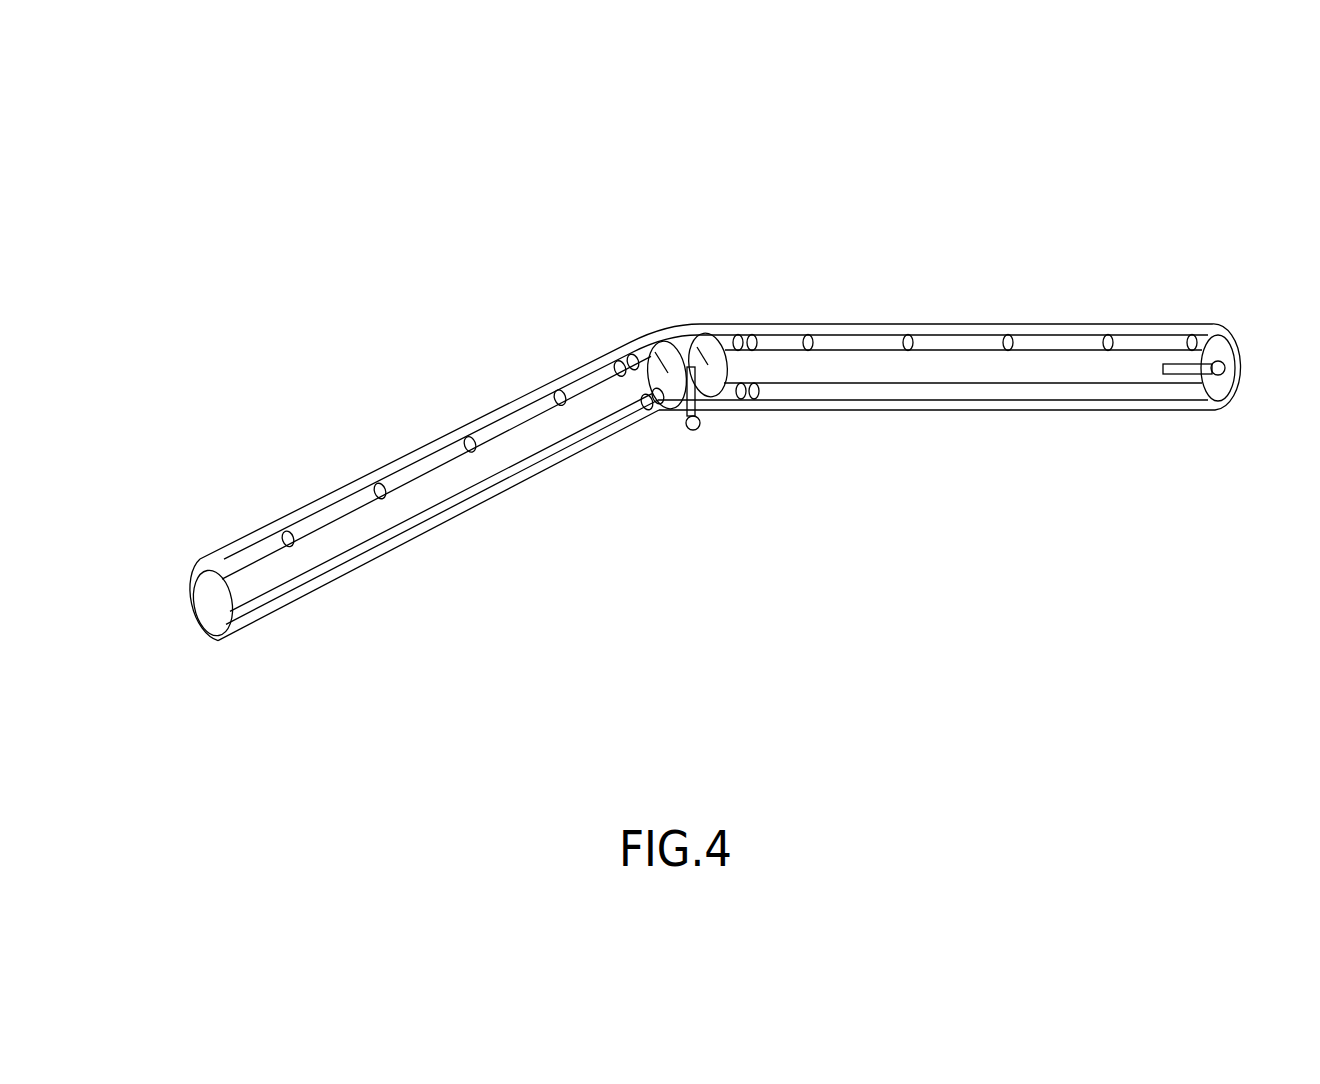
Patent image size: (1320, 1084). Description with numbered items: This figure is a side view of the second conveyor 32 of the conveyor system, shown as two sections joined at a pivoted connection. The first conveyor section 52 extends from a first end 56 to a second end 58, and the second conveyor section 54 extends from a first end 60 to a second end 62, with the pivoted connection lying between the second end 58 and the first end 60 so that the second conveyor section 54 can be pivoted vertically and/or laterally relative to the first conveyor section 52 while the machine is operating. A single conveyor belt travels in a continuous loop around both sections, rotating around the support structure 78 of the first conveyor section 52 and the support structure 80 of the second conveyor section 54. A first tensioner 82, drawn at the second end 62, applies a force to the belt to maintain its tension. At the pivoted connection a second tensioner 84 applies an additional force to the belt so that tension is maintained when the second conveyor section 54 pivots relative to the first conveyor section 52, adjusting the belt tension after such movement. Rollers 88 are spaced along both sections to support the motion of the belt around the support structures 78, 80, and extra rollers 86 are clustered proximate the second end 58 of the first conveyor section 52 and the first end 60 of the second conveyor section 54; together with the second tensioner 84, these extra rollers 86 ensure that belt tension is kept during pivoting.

The second conveyor 32 is at (1190, 194).
The first conveyor section 52 is at (408, 582).
The second conveyor section 54 is at (1023, 452).
The first end 56 is at (210, 602).
The second end 58 is at (652, 340).
The first end 60 is at (695, 336).
The second end 62 is at (1226, 359).
The support structure 78 is at (253, 580).
The support structure 80 is at (924, 376).
The first tensioner 82 is at (1219, 377).
The second tensioner 84 is at (698, 429).
The extra rollers 86 is at (631, 354).
The rollers 88 is at (287, 525).